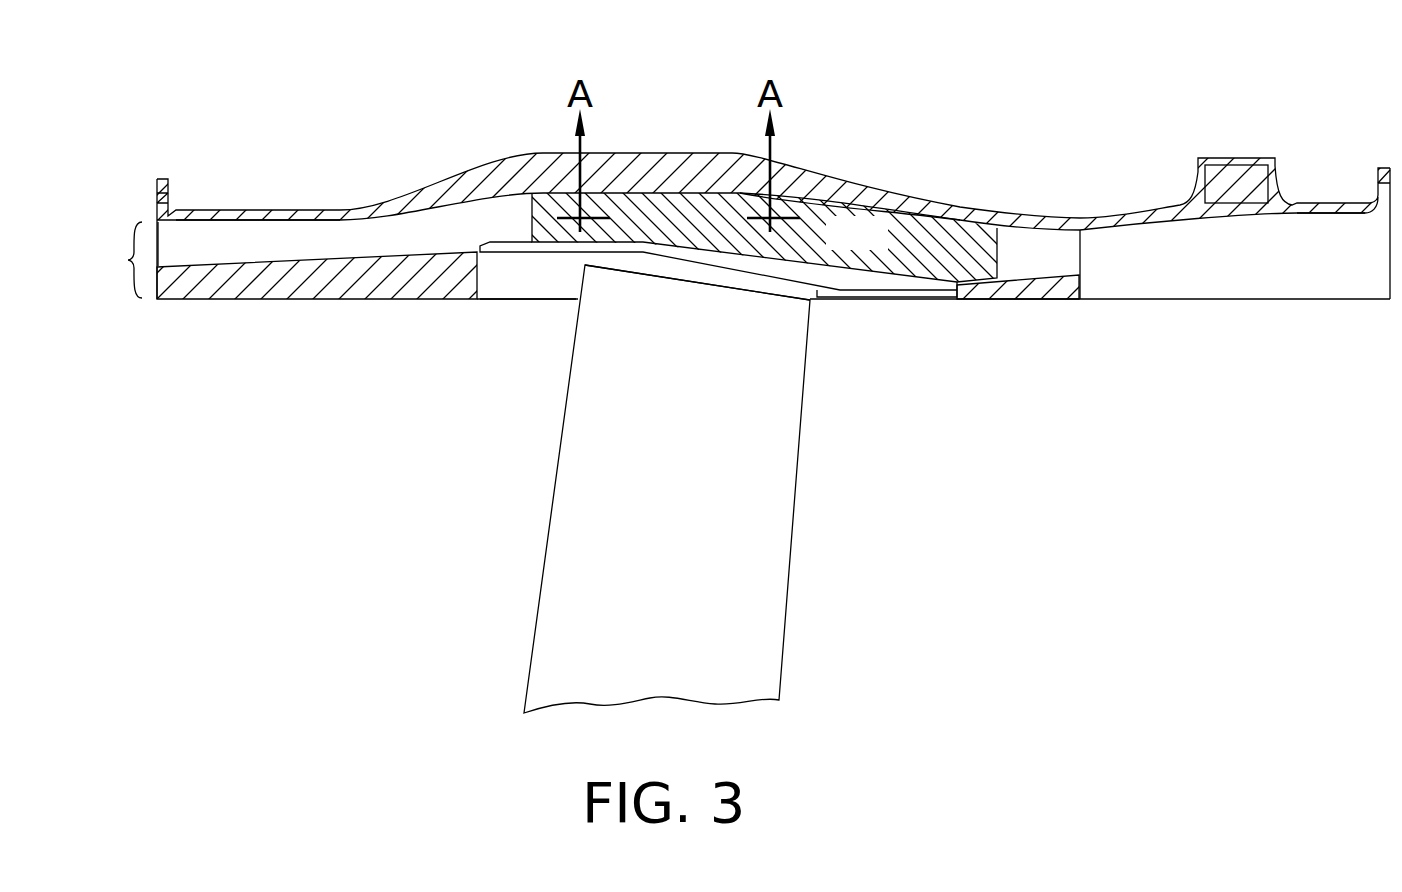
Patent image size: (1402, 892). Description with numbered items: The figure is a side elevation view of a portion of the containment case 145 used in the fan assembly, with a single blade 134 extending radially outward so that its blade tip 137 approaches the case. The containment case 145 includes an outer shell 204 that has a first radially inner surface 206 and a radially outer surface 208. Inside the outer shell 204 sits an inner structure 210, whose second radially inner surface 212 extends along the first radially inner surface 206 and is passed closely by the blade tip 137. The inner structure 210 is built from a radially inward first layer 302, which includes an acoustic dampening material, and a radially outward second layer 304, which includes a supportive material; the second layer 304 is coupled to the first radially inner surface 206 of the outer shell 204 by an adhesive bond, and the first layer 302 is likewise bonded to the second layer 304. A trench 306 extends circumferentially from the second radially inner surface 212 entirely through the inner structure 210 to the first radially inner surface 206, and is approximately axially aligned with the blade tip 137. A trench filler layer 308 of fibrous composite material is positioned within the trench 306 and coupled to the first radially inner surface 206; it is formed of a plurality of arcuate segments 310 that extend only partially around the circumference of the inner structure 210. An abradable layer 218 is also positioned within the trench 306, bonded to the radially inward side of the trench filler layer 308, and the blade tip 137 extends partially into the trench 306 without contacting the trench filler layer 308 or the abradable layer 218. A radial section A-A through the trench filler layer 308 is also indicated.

The blade 134 is at (745, 648).
The blade tip 137 is at (638, 283).
The containment case 145 is at (1177, 108).
The outer shell 204 is at (443, 193).
The first radially inner surface 206 is at (230, 220).
The radially outer surface 208 is at (188, 208).
The inner structure 210 is at (110, 260).
The second radially inner surface 212 is at (300, 299).
The abradable layer 218 is at (833, 280).
The first layer 302 is at (207, 283).
The second layer 304 is at (190, 243).
The trench 306 is at (527, 297).
The trench filler layer 308 is at (882, 247).
The arcuate segment 310 is at (785, 212).